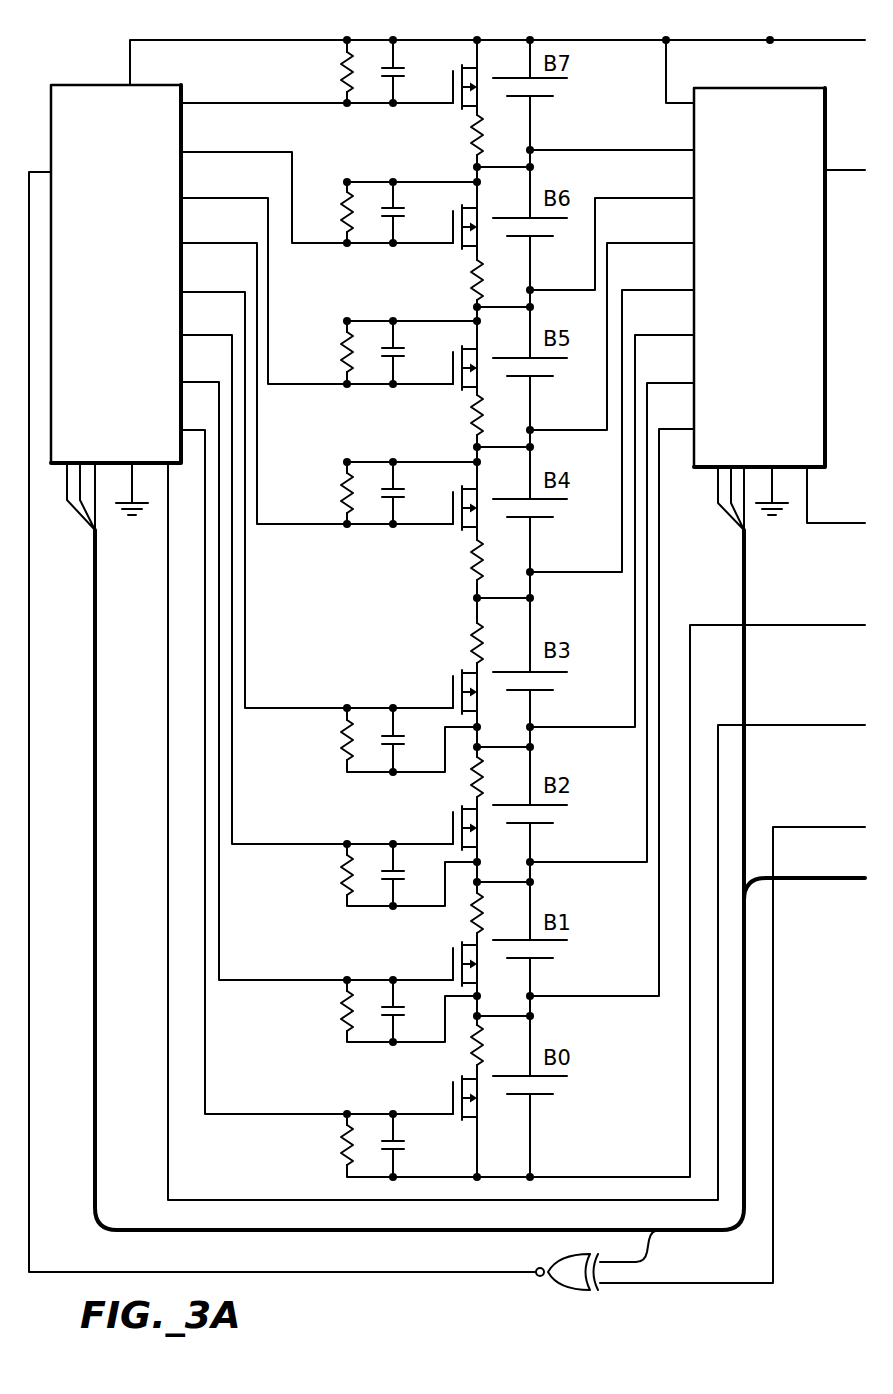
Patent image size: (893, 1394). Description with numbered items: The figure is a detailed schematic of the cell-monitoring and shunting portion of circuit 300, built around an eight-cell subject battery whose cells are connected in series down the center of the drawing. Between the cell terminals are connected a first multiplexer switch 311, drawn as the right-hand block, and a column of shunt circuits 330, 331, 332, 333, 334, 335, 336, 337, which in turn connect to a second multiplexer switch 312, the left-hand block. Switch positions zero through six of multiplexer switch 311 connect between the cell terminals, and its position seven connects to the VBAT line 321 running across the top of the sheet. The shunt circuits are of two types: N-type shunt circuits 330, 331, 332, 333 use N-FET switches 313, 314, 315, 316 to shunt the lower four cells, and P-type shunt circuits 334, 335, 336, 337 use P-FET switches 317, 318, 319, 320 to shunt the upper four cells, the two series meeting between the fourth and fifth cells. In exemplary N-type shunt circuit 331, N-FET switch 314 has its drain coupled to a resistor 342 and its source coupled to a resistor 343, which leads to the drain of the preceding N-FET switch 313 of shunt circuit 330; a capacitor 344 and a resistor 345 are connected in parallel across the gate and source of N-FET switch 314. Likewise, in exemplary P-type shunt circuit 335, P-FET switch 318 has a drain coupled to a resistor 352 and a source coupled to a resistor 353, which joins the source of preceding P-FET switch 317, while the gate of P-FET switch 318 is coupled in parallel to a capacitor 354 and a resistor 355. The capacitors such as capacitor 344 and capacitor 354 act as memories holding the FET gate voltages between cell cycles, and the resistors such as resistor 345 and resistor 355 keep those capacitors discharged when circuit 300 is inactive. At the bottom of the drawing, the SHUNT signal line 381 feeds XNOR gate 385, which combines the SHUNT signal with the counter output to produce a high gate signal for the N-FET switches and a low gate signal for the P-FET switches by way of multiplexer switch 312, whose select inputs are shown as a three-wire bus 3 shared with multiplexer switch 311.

The circuit 300 is at (372, 1292).
The first multiplexer switch 311 is at (782, 85).
The second multiplexer switch 312 is at (97, 85).
The N-FET switch 313 is at (483, 1103).
The N-FET switch 314 is at (483, 969).
The N-FET switch 315 is at (483, 833).
The N-FET switch 316 is at (483, 697).
The P-FET switch 317 is at (470, 530).
The P-FET switch 318 is at (470, 390).
The P-FET switch 319 is at (470, 250).
The P-FET switch 320 is at (470, 110).
The VBAT line 321 is at (207, 48).
The N-type shunt circuit 330 is at (378, 1103).
The N-type shunt circuit 331 is at (329, 714).
The N-type shunt circuit 332 is at (378, 833).
The N-type shunt circuit 333 is at (378, 695).
The P-type shunt circuit 334 is at (376, 538).
The P-type shunt circuit 335 is at (329, 314).
The P-type shunt circuit 336 is at (376, 257).
The P-type shunt circuit 337 is at (376, 116).
The resistor 342 is at (465, 912).
The resistor 343 is at (474, 1003).
The capacitor 344 is at (404, 1004).
The resistor 345 is at (345, 1013).
The resistor 352 is at (472, 292).
The resistor 353 is at (472, 448).
The capacitor 354 is at (402, 348).
The resistor 355 is at (345, 349).
The SHUNT signal line 381 is at (732, 1288).
The XNOR gate 385 is at (562, 1292).
The three-wire select bus 3 is at (756, 562).